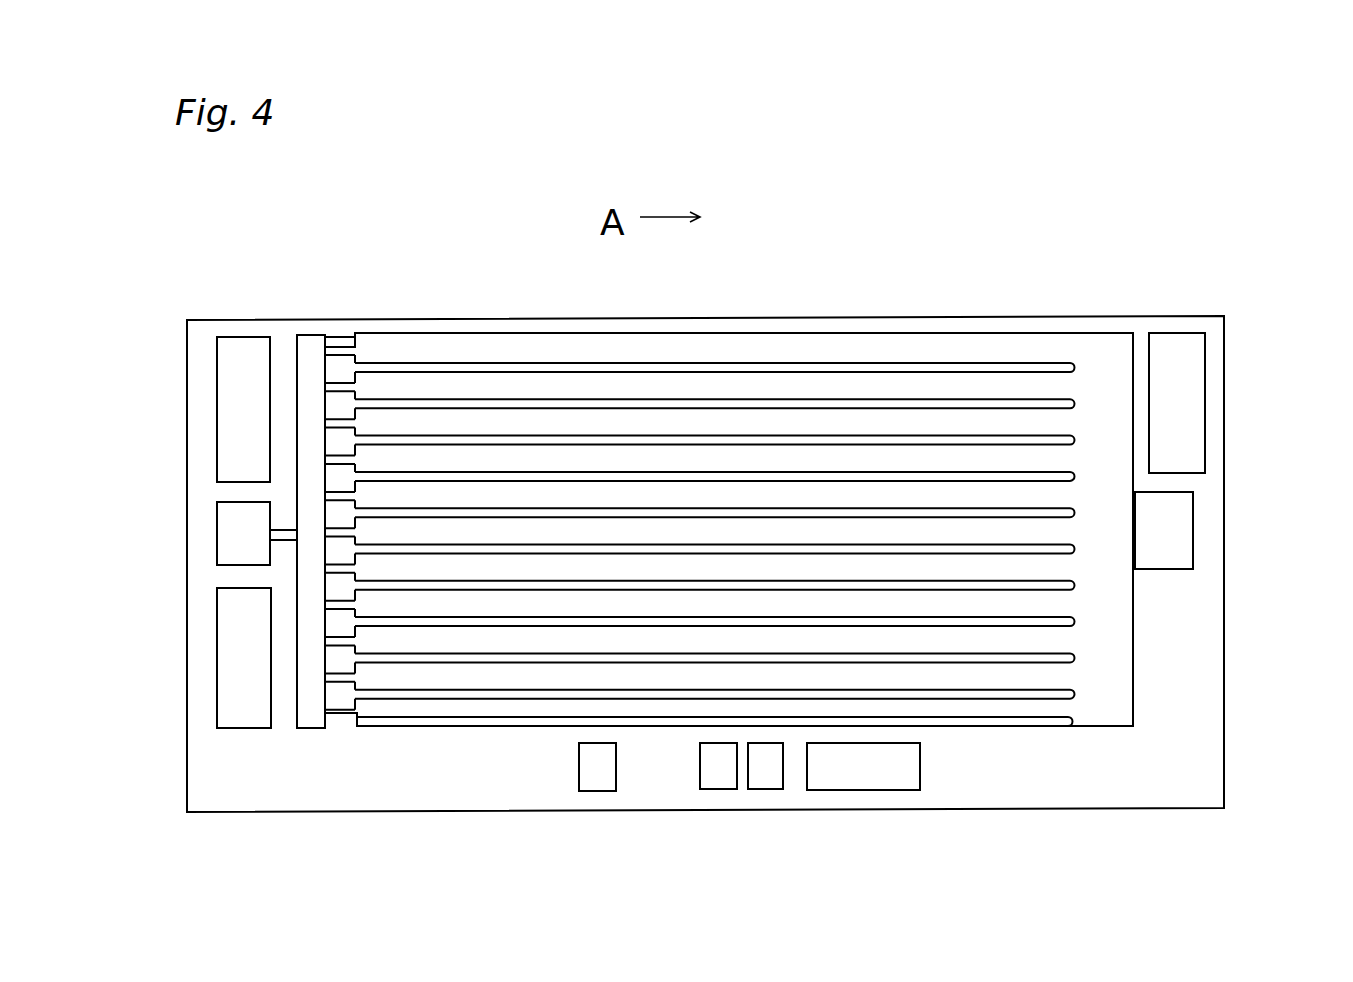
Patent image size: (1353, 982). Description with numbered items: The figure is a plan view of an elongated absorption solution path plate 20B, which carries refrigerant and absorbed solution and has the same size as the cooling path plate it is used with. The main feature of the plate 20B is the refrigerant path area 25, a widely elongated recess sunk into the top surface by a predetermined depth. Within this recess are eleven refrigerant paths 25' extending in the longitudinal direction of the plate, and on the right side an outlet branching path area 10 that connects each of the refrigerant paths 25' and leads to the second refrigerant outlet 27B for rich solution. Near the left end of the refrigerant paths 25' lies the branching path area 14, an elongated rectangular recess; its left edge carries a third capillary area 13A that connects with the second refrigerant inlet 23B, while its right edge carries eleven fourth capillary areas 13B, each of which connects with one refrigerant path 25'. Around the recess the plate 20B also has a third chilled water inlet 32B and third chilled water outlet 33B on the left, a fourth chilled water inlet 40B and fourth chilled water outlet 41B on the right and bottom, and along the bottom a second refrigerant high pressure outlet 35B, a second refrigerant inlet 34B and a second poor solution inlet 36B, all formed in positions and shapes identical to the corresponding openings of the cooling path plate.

The absorption solution path plate 20B is at (758, 148).
The outlet branching path area 10 is at (1112, 724).
The refrigerant path area 25 is at (715, 466).
The refrigerant paths 25' is at (729, 488).
The branching path area 14 is at (313, 729).
The third capillary area 13A is at (323, 347).
The fourth capillary areas 13B is at (343, 347).
The third chilled water inlet 32B is at (241, 361).
The second refrigerant inlet 23B is at (228, 512).
The third chilled water outlet 33B is at (247, 725).
The fourth chilled water inlet 40B is at (1175, 365).
The second refrigerant outlet 27B is at (1178, 545).
The second refrigerant outlet 35B is at (593, 787).
The second refrigerant inlet 34B is at (713, 775).
The second poor solution inlet 36B is at (765, 778).
The fourth chilled water outlet 41B is at (903, 778).